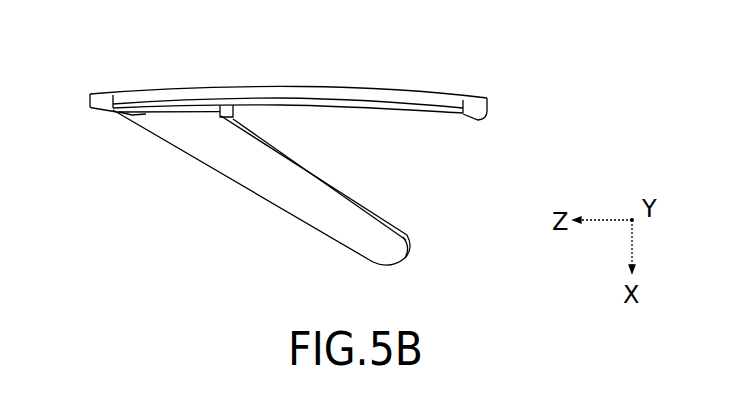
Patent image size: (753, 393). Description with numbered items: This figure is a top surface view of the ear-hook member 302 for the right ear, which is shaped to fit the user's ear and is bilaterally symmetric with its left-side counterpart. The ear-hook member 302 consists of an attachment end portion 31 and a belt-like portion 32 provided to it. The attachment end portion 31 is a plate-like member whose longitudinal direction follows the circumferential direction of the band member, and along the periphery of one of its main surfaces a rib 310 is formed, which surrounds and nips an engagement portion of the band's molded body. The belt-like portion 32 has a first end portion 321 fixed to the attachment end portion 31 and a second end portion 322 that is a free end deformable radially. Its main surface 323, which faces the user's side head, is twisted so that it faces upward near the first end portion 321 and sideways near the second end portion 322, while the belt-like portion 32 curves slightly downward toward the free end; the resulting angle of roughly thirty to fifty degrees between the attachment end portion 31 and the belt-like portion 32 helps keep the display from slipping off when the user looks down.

The ear-hook member 302 is at (98, 82).
The attachment end portion 31 is at (387, 110).
The rib 310 is at (293, 86).
The first end portion 321 is at (175, 115).
The belt-like portion 32 is at (308, 191).
The main surface 323 is at (228, 155).
The second end portion 322 is at (414, 248).